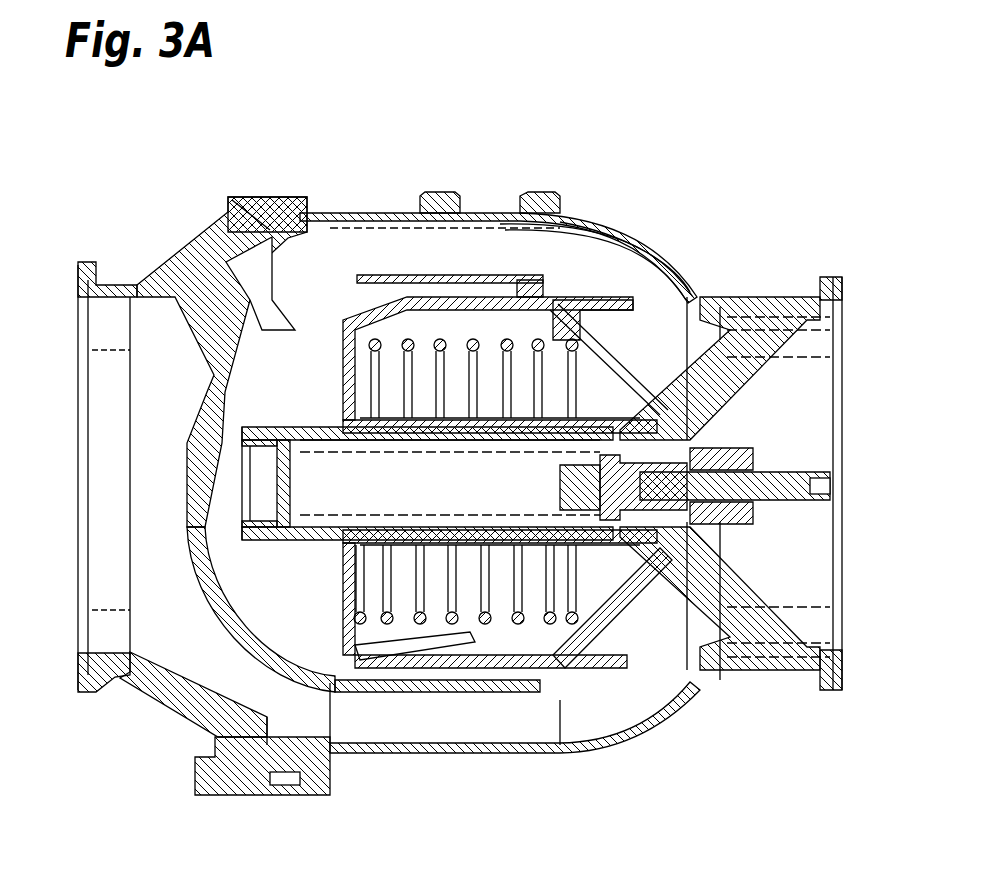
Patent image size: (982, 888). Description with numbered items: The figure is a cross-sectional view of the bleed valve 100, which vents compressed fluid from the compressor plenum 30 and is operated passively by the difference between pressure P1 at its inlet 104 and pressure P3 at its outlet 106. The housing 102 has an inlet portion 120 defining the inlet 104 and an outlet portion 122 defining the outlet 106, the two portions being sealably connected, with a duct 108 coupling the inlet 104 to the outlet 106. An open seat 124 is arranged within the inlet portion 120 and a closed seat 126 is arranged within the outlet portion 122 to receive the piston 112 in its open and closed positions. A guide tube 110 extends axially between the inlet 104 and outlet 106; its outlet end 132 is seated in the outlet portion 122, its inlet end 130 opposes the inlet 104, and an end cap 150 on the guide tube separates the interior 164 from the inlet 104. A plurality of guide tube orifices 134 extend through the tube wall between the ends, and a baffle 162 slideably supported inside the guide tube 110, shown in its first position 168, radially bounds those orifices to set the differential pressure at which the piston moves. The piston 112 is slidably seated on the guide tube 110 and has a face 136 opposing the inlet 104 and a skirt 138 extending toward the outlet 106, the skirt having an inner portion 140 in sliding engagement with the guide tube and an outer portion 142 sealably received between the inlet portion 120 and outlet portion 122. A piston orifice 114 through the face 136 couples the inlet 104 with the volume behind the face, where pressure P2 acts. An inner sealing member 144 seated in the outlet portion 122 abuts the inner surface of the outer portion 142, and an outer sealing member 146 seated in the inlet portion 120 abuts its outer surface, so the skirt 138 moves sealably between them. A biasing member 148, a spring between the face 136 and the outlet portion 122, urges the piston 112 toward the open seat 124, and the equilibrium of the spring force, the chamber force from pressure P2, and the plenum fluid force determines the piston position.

The bleed valve 100 is at (198, 118).
The plenum 30 is at (51, 500).
The housing 102 is at (362, 205).
The inlet 104 is at (203, 633).
The outlet 106 is at (814, 421).
The duct 108 is at (443, 727).
The guide tube 110 is at (313, 430).
The piston 112 is at (333, 613).
The piston orifice 114 is at (345, 410).
The inlet portion 120 is at (178, 270).
The outlet portion 122 is at (658, 256).
The open seat 124 is at (307, 287).
The closed seat 126 is at (707, 297).
The inlet end 130 is at (268, 548).
The outlet end 132 is at (641, 470).
The guide tube orifice 134 is at (617, 557).
The face 136 is at (390, 340).
The skirt 138 is at (430, 297).
The inner portion 140 is at (490, 450).
The outer portion 142 is at (613, 297).
The inner sealing member 144 is at (558, 323).
The outer sealing member 146 is at (527, 298).
The biasing member 148 is at (497, 347).
The end cap 150 is at (286, 497).
The baffle 162 is at (548, 520).
The interior 164 is at (429, 475).
The first position 168 is at (596, 468).
The pressure at inlet P1 is at (232, 495).
The pressure P2 is at (475, 600).
The pressure at outlet P3 is at (757, 547).